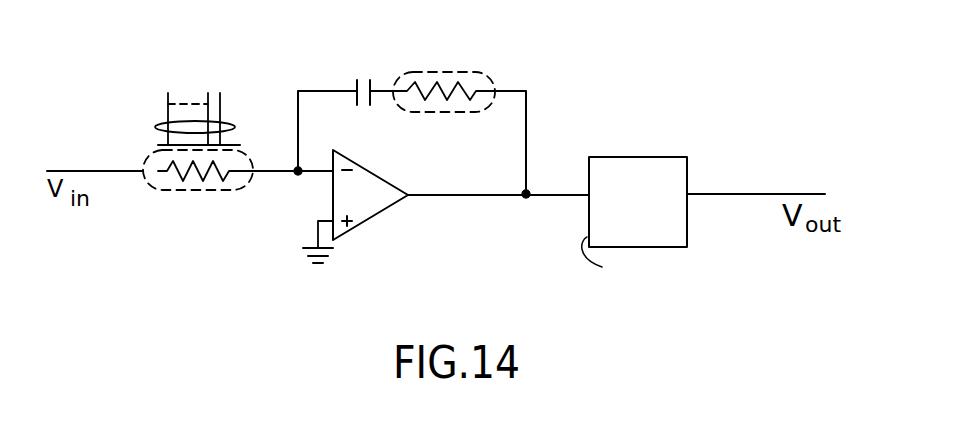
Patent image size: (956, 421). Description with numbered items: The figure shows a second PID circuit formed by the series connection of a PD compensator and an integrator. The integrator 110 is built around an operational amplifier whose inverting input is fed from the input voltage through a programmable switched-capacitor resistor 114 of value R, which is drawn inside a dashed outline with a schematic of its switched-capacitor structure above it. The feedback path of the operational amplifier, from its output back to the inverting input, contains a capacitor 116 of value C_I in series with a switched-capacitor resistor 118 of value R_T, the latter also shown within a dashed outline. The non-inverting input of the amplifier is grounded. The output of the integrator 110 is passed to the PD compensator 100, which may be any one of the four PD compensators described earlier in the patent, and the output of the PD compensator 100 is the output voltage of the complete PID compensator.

The PD compensator 100 is at (655, 210).
The integrator 110 is at (358, 177).
The programmable switched-capacitor resistor 114 is at (253, 150).
The capacitor 116 is at (362, 78).
The switched-capacitor resistor 118 is at (464, 70).